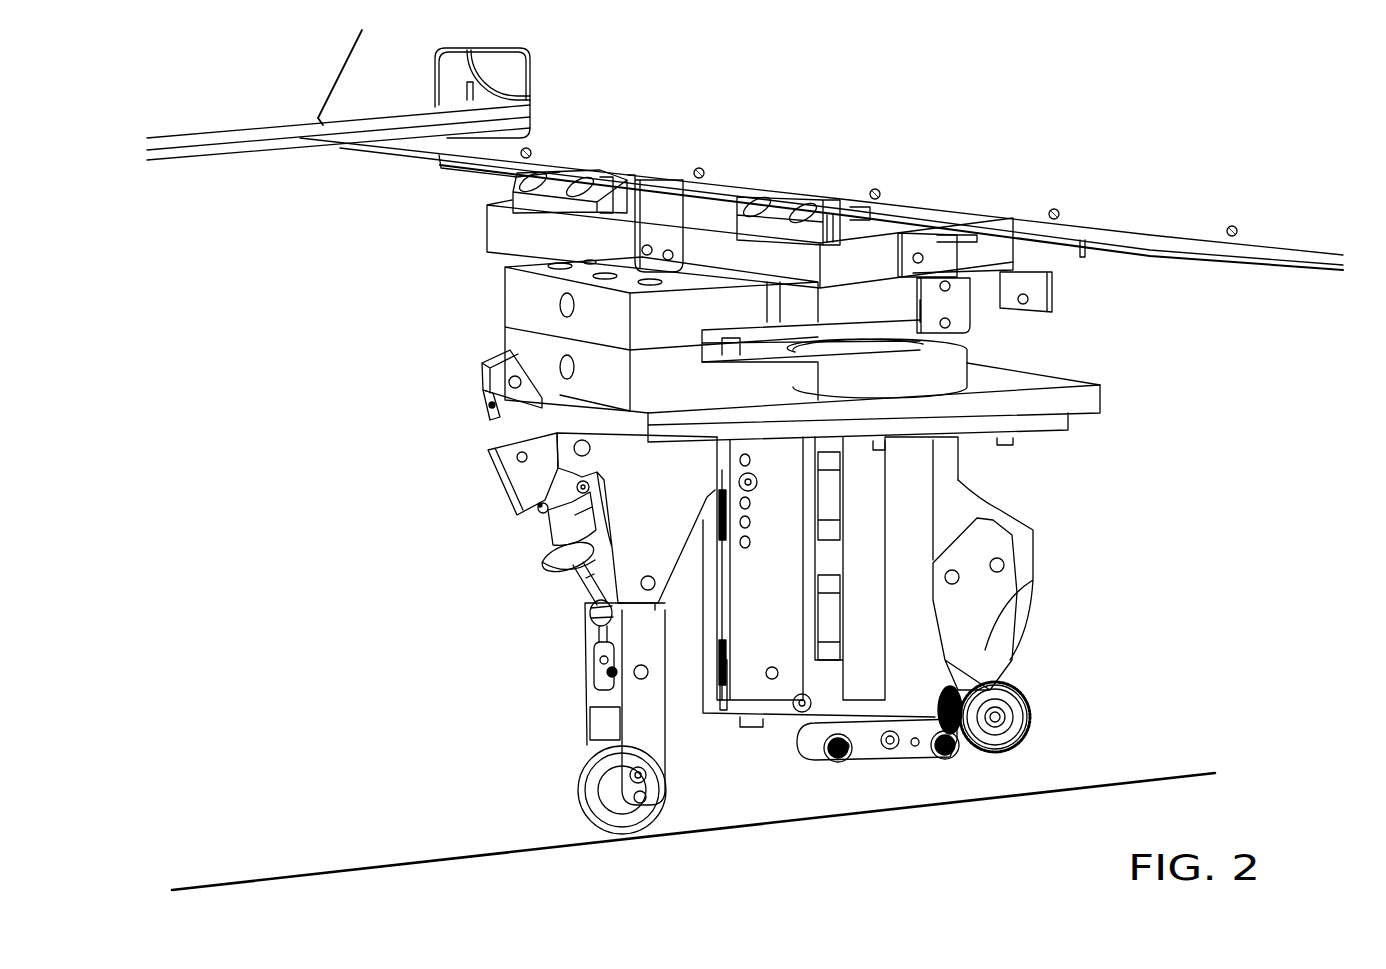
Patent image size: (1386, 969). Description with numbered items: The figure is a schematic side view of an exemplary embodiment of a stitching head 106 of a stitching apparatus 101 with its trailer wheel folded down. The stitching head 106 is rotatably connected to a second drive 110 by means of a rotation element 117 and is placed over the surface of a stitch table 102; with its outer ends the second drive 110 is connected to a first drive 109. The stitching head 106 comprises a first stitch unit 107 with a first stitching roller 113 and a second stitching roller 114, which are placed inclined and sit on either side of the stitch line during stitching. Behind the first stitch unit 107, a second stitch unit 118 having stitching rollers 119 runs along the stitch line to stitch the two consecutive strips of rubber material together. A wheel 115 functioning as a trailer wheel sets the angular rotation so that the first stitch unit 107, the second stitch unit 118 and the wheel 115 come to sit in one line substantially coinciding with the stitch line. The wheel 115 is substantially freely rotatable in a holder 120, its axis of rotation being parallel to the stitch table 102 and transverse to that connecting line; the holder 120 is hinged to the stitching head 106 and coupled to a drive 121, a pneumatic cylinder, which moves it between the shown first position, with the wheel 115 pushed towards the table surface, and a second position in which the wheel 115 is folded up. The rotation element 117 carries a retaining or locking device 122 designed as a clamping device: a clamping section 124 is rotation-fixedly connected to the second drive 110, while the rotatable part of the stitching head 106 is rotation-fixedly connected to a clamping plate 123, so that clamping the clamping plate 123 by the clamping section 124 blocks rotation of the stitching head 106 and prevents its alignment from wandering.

The transport and mounting system 101 is at (1098, 196).
The stitch table 102 is at (548, 848).
The stitching head 106 is at (1198, 309).
The first stitch unit 107 is at (1047, 678).
The first drive 109 is at (212, 150).
The second drive 110 is at (983, 203).
The first stitching roller 113 is at (1005, 683).
The second stitching roller 114 is at (950, 692).
The wheel 115 is at (587, 785).
The rotation element 117 is at (983, 315).
The second stitch unit 118 is at (950, 770).
The stitching rollers 119 is at (800, 752).
The holder 120 is at (643, 697).
The drive 121 is at (553, 528).
The retaining device or locking device 122 is at (480, 272).
The clamping plate 123 is at (762, 357).
The clamping section 124 is at (685, 344).